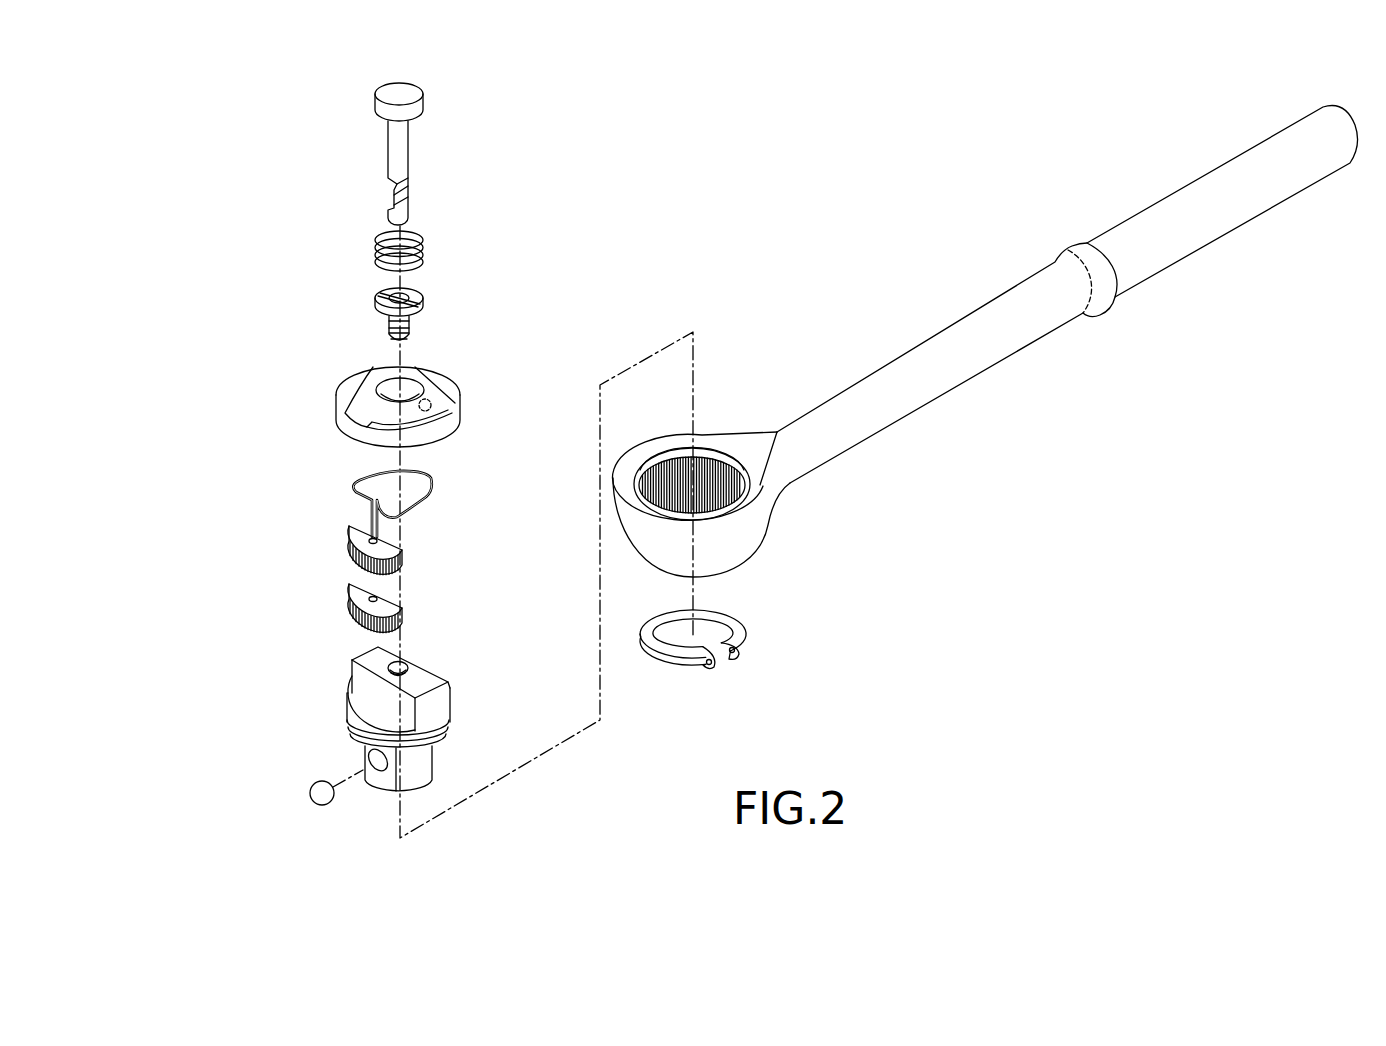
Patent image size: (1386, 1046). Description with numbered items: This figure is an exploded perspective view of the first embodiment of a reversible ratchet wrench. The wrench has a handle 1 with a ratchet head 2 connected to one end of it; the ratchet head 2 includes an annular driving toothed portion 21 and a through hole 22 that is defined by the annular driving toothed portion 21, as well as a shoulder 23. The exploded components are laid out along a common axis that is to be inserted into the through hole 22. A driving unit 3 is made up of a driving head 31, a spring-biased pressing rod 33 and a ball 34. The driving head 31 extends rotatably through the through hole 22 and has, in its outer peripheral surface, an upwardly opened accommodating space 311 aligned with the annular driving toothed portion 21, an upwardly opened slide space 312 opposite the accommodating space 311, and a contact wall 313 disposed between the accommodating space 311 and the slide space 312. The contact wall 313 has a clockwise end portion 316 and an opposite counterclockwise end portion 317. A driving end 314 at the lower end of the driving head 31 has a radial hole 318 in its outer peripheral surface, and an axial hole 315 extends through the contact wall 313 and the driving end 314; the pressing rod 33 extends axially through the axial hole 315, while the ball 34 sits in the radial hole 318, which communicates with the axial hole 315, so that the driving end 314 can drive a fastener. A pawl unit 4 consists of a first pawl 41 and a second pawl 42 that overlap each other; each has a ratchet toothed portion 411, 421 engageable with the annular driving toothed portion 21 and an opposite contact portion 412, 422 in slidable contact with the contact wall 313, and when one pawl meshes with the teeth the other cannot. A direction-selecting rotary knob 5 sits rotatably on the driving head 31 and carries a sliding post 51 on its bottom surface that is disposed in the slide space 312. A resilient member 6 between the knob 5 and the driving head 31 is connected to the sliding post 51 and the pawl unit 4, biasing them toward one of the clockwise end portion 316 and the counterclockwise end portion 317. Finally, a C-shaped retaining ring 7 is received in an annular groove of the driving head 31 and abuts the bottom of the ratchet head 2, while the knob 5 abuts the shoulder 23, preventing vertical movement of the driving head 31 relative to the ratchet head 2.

The handle 1 is at (1148, 200).
The ratchet head 2 is at (738, 473).
The annular driving toothed portion 21 is at (775, 502).
The through hole 22 is at (724, 456).
The shoulder 23 is at (655, 456).
The driving unit 3 is at (388, 705).
The driving head 31 is at (416, 705).
The accommodating space 311 is at (430, 720).
The slide space 312 is at (430, 662).
The contact wall 313 is at (465, 695).
The counterclockwise end portion 317 is at (423, 688).
The driving end 314 is at (384, 764).
The axial hole 315 is at (405, 662).
The clockwise end portion 316 is at (362, 654).
The radial hole 318 is at (372, 754).
The pressing rod 33 is at (403, 157).
The ball 34 is at (310, 793).
The pawl unit 4 is at (345, 539).
The first pawl 41 is at (368, 547).
The ratchet toothed portion 411 is at (346, 552).
The contact portion 412 is at (434, 532).
The second pawl 42 is at (358, 607).
The ratchet toothed portion 421 is at (346, 620).
The contact portion 422 is at (383, 601).
The direction-selecting rotary knob 5 is at (379, 404).
The sliding post 51 is at (431, 403).
The resilient member 6 is at (358, 480).
The C-shaped retaining ring 7 is at (760, 633).